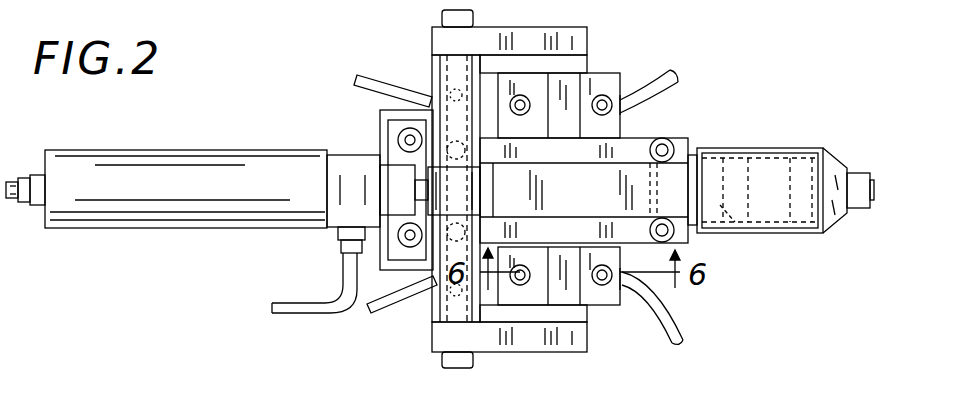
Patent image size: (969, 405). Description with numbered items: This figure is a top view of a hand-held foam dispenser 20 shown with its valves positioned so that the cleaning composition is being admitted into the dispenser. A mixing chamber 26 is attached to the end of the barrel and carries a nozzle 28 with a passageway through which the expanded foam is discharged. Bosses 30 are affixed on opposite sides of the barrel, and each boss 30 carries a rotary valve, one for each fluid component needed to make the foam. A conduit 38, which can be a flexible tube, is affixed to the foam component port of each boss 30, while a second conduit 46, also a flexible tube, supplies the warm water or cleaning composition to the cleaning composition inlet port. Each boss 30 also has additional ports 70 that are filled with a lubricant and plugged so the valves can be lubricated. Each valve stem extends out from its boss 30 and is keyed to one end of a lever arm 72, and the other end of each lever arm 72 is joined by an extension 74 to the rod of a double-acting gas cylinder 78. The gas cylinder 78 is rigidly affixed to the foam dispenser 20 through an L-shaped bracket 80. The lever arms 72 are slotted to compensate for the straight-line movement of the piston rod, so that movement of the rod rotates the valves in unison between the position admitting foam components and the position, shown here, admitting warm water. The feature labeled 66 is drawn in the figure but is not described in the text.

The hand-held foam dispenser 20 is at (676, 138).
The mixing chamber 26 is at (740, 150).
The nozzle 28 is at (778, 148).
The boss 30 is at (622, 96).
The conduit 38 is at (357, 80).
The conduit 46 is at (682, 76).
The passage 66 is at (727, 217).
The port 70 is at (528, 100).
The lever arm 72 is at (587, 40).
The extension 74 is at (433, 64).
The double-acting gas cylinder 78 is at (168, 152).
The L-shaped bracket 80 is at (380, 128).